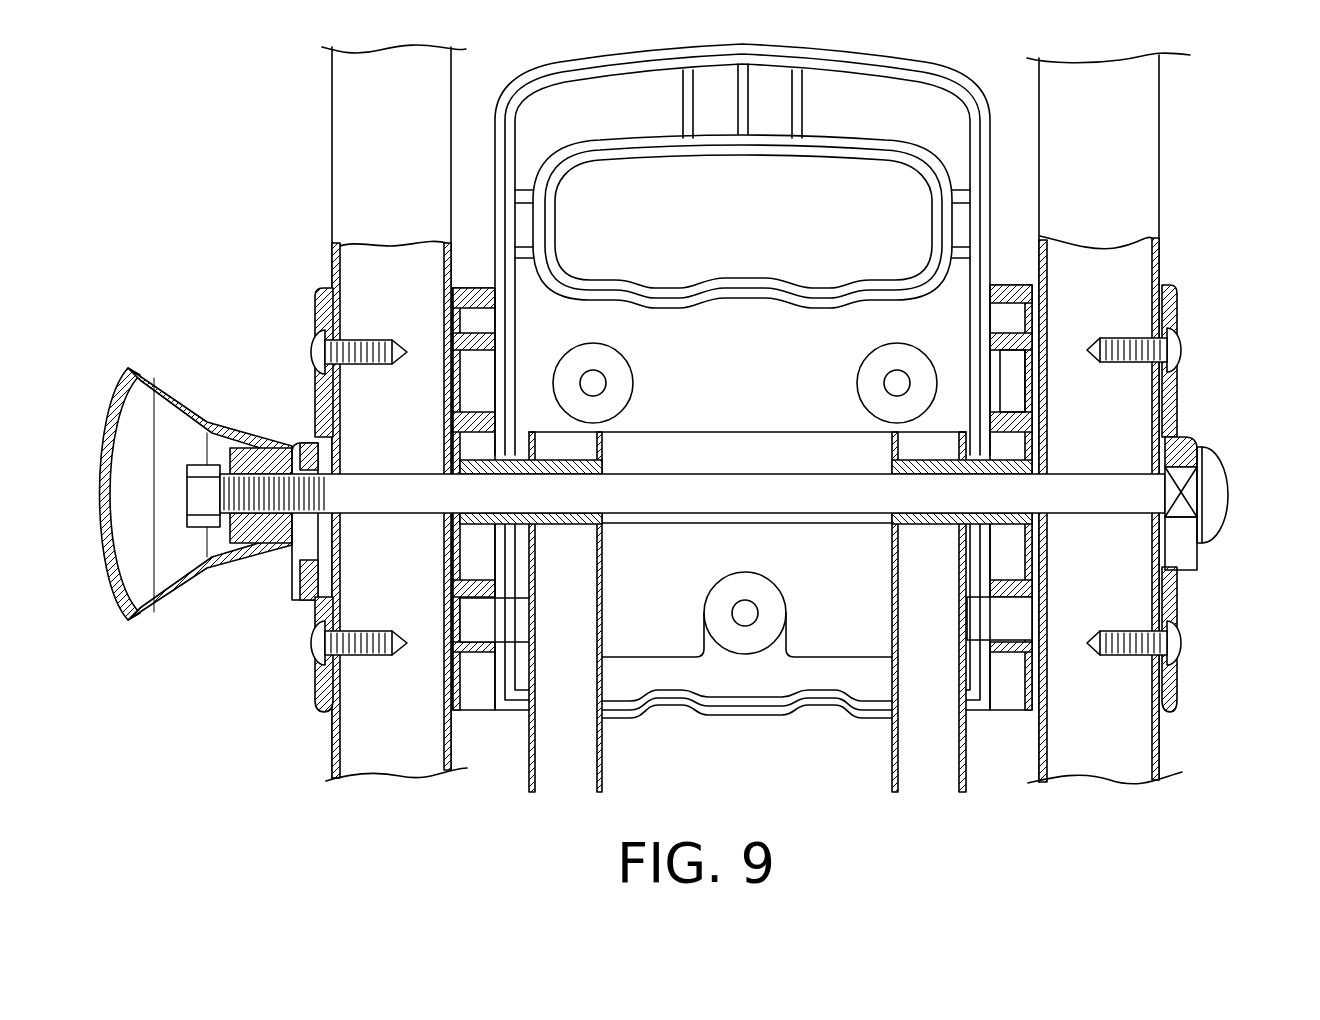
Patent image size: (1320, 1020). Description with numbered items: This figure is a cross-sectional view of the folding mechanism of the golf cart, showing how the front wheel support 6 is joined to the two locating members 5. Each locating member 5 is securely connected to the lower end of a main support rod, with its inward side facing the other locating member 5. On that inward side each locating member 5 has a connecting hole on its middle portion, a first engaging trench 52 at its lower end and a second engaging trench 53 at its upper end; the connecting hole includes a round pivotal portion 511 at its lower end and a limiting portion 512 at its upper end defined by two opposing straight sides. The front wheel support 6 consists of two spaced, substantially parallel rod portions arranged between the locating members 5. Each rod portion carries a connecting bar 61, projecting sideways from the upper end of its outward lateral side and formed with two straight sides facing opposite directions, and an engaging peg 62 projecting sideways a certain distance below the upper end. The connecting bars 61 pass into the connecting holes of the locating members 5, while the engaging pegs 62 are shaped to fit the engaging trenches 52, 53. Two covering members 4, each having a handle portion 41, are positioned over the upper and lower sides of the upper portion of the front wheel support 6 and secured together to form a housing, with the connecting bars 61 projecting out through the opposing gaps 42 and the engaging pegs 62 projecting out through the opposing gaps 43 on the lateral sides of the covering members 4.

The covering member 4 is at (490, 172).
The handle portion 41 is at (882, 64).
The gap 42 is at (500, 450).
The gap 43 is at (482, 622).
The locating member 5 is at (318, 302).
The round pivotal portion 511 is at (1010, 548).
The limiting portion 512 is at (1015, 408).
The first engaging trench 52 is at (1050, 605).
The second engaging trench 53 is at (1013, 368).
The front wheel support 6 is at (890, 740).
The connecting bar 61 is at (480, 530).
The engaging peg 62 is at (455, 660).